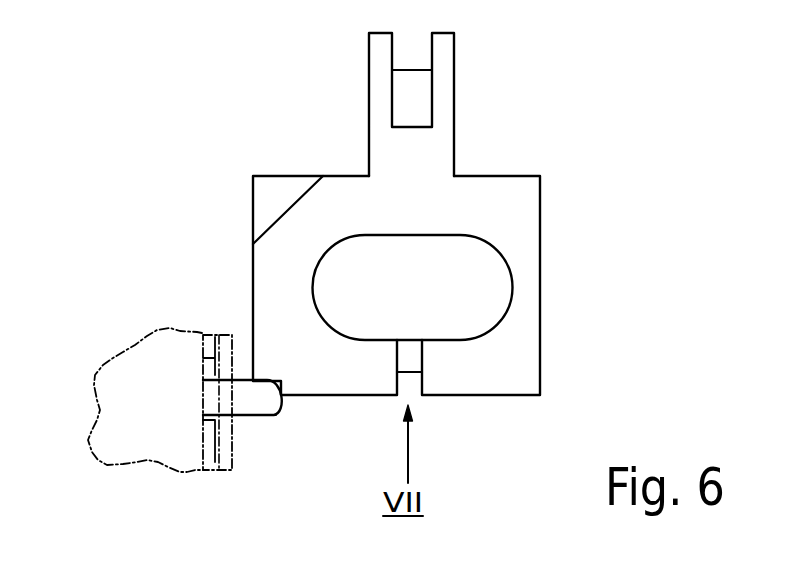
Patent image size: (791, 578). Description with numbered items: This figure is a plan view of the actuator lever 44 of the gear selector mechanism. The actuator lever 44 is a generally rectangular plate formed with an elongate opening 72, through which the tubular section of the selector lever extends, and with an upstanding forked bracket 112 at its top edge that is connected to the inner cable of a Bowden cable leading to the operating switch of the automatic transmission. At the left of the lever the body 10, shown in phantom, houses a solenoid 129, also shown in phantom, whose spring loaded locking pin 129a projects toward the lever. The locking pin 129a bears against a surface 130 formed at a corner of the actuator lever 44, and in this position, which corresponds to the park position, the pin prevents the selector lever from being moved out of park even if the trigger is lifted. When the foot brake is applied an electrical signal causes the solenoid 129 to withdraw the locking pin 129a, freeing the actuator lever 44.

The body 10 is at (217, 455).
The actuator lever 44 is at (552, 208).
The elongate opening 72 is at (507, 301).
The bracket 112 is at (447, 75).
The solenoid 129 is at (130, 440).
The locking pin 129a is at (255, 420).
The surface 130 is at (266, 380).